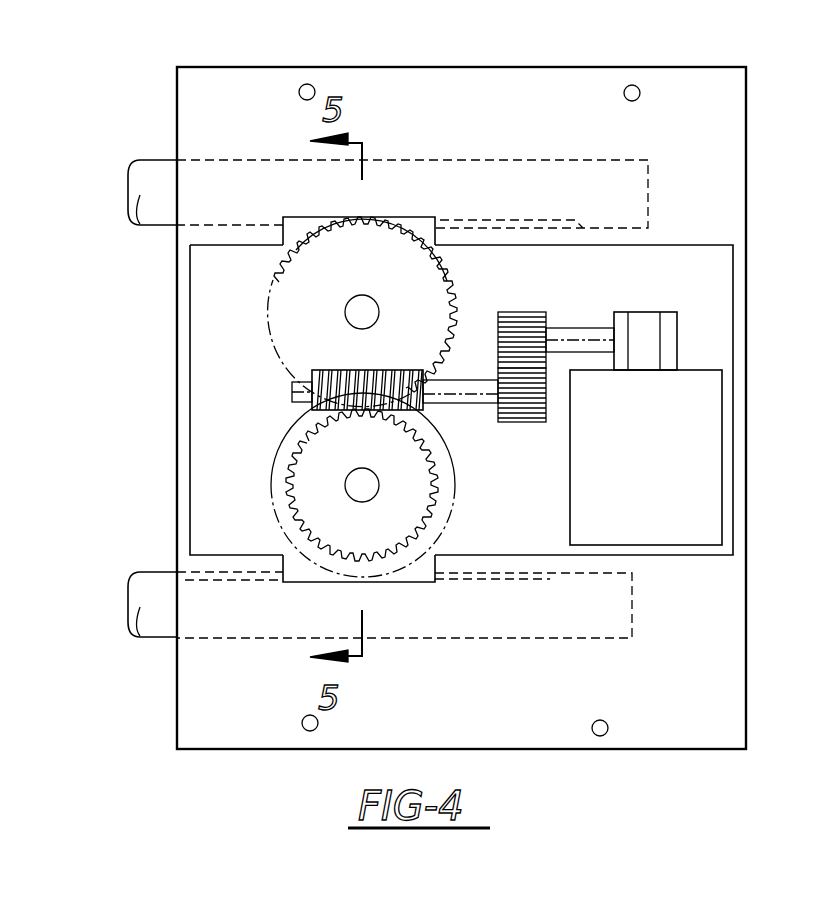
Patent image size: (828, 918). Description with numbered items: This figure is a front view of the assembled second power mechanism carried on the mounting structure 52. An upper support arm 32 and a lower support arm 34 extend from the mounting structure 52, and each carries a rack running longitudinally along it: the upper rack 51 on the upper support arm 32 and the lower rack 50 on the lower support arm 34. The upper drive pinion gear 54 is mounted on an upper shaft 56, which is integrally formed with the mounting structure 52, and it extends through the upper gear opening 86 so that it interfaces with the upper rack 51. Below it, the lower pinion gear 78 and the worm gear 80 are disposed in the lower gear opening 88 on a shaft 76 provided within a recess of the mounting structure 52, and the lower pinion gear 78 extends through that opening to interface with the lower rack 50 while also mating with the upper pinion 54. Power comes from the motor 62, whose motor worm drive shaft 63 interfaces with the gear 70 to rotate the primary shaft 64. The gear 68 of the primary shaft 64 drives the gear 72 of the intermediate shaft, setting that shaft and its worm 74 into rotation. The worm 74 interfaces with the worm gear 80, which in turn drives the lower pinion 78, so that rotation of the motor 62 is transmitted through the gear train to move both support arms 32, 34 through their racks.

The upper support arm 32 is at (155, 163).
The lower support arm 34 is at (155, 583).
The lower rack 50 is at (515, 576).
The upper rack 51 is at (483, 226).
The mounting structure 52 is at (722, 343).
The upper drive pinion gear 54 is at (282, 328).
The upper shaft 56 is at (375, 315).
The motor 62 is at (712, 505).
The motor worm drive shaft 63 is at (645, 362).
The primary shaft 64 is at (593, 336).
The gear of primary shaft 68 is at (530, 318).
The gear 70 is at (676, 322).
The gear of intermediate shaft 72 is at (522, 410).
The worm 74 is at (300, 391).
The shaft 76 is at (368, 487).
The lower pinion gear 78 is at (276, 455).
The worm gear 80 is at (284, 497).
The upper gear opening 86 is at (300, 223).
The lower gear opening 88 is at (300, 575).